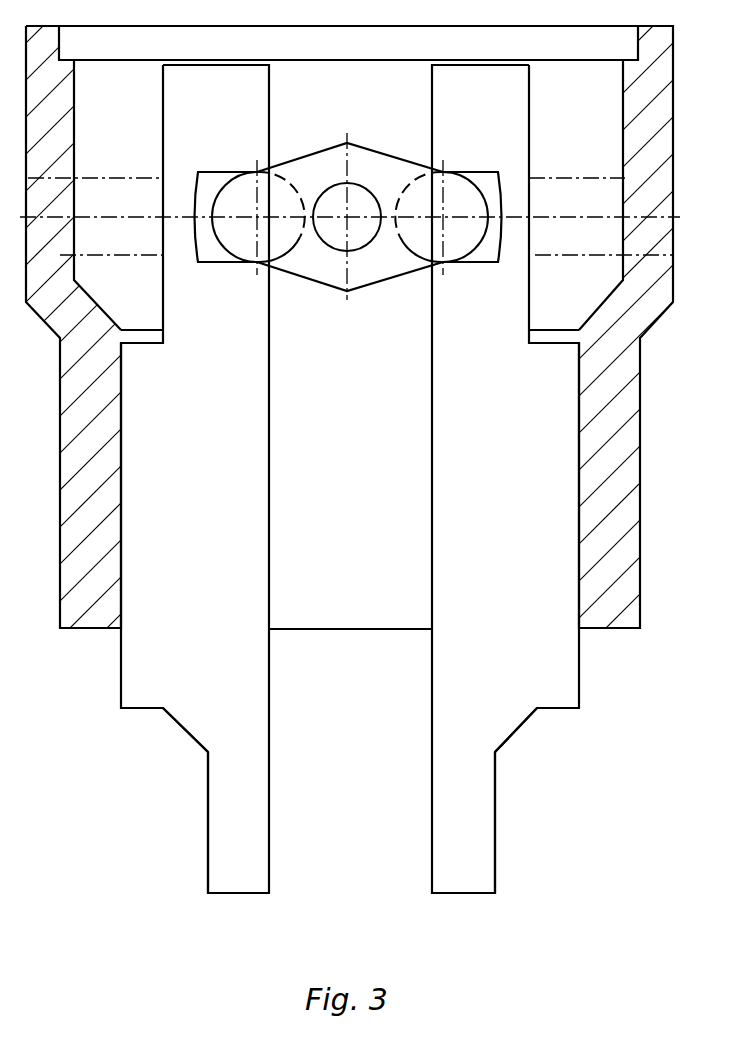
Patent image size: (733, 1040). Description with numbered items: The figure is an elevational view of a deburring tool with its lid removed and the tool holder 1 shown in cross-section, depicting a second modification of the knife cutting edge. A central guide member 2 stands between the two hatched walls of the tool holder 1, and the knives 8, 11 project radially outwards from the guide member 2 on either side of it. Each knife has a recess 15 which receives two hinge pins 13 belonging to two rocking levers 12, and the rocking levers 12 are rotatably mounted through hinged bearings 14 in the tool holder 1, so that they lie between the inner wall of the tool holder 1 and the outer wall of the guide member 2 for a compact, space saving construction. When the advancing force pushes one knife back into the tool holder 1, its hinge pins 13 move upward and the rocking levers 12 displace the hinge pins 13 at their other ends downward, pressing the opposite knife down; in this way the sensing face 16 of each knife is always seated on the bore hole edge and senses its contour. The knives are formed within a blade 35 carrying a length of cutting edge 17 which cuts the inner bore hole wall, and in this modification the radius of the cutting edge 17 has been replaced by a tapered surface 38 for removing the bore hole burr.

The tool holder 1 is at (90, 598).
The guide member 2 is at (347, 594).
The knife 8 is at (553, 677).
The knife 11 is at (145, 678).
The rocking lever 12 is at (317, 255).
The hinge pin 13 is at (273, 240).
The hinged bearing 14 is at (145, 250).
The recess 15 is at (210, 250).
The sensing face 16 is at (145, 712).
The cutting edge 17 is at (208, 815).
The blade 35 is at (227, 865).
The tapered surface 38 is at (187, 737).